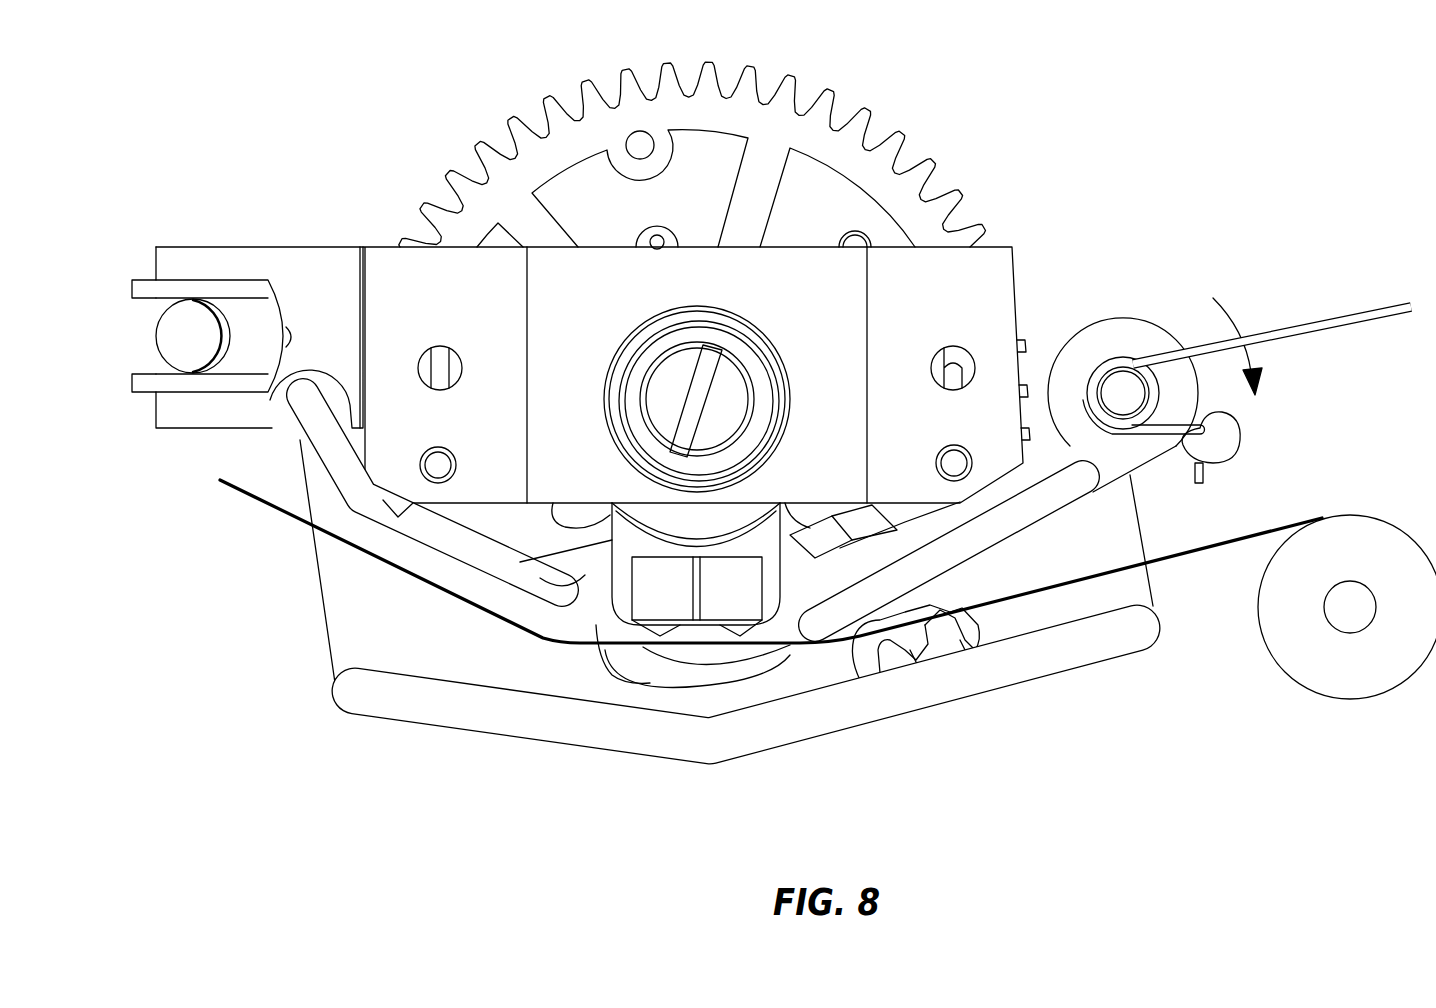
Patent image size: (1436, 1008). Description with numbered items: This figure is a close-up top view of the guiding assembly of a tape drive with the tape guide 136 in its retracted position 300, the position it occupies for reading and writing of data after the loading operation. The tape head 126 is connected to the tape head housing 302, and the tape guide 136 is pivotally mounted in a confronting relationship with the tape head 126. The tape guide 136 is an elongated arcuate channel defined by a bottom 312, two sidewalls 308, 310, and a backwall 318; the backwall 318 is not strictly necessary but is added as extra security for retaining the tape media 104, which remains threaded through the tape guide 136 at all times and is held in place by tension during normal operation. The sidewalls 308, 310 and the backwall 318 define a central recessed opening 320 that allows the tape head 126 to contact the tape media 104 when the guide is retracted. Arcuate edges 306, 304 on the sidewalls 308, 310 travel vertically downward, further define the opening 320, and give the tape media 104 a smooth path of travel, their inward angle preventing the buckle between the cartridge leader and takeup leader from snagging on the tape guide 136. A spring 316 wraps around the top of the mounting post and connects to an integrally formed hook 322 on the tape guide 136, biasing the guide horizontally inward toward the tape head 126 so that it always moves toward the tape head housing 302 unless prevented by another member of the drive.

The tape media 104 is at (245, 497).
The tape head 126 is at (637, 626).
The tape guide 136 is at (324, 622).
The retracted position 300 is at (1237, 321).
The tape head housing 302 is at (714, 278).
The arcuate edge 304 is at (815, 520).
The arcuate edge 306 is at (568, 580).
The sidewall 308 is at (416, 550).
The sidewall 310 is at (939, 576).
The bottom 312 is at (421, 650).
The spring 316 is at (1380, 297).
The backwall 318 is at (841, 722).
The central recessed opening 320 is at (723, 688).
The hook 322 is at (1241, 424).